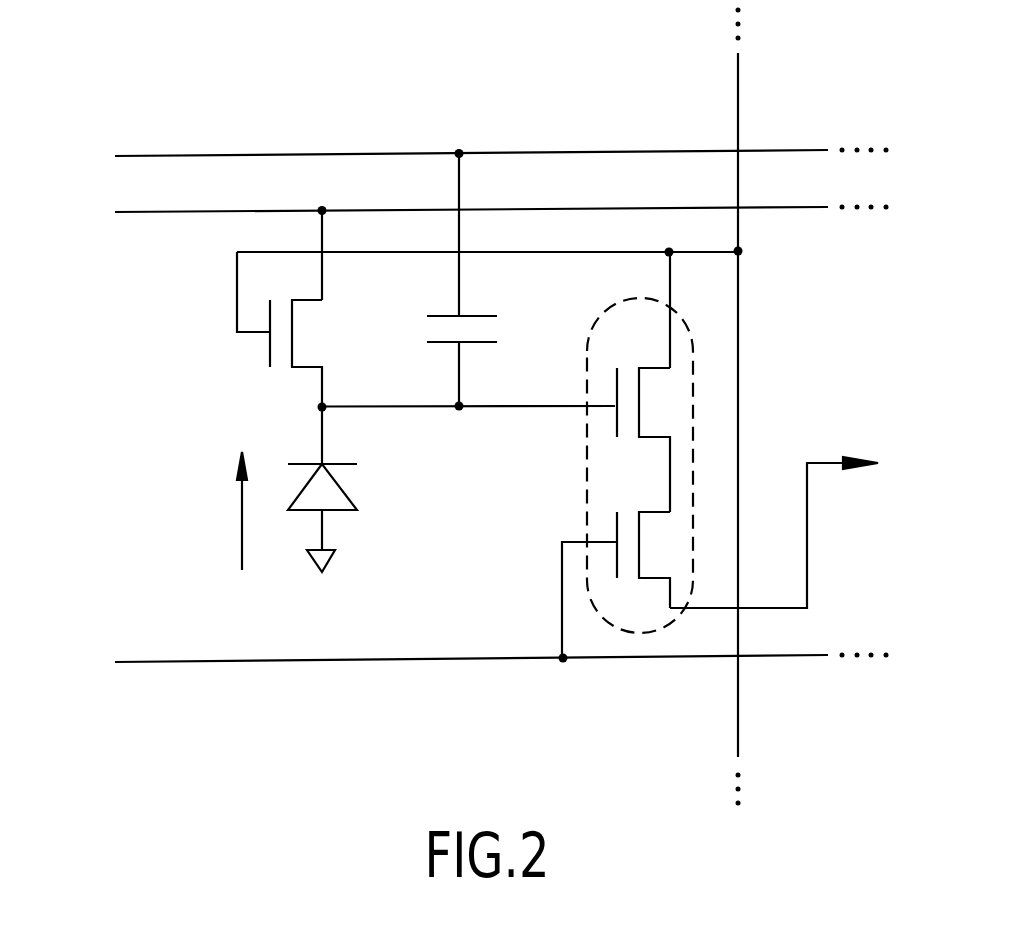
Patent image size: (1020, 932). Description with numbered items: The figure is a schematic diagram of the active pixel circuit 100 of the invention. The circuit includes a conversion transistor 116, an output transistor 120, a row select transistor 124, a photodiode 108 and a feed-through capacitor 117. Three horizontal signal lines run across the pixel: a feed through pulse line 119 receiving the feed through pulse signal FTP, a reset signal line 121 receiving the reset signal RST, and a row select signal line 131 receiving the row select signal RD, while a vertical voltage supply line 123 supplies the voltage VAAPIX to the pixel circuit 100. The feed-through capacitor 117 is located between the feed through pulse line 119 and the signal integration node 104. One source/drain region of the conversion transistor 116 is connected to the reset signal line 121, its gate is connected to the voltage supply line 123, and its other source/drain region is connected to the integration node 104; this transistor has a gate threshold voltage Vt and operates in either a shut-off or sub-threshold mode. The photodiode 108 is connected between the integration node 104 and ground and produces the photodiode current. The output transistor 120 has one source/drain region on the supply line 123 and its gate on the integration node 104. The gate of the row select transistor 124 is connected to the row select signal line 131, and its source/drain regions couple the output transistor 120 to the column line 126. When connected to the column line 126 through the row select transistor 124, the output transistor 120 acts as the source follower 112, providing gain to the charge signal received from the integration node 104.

The active pixel circuit 100 is at (242, 772).
The signal integration node 104 is at (459, 408).
The photodiode 108 is at (343, 512).
The source follower 112 is at (640, 633).
The conversion transistor 116 is at (267, 353).
The feed-through capacitor 117 is at (477, 315).
The feed through pulse line 119 is at (288, 156).
The output transistor 120 is at (615, 422).
The reset signal line 121 is at (175, 212).
The voltage supply line 123 is at (738, 192).
The row select transistor 124 is at (615, 532).
The column line 126 is at (842, 460).
The row select signal line 131 is at (475, 659).